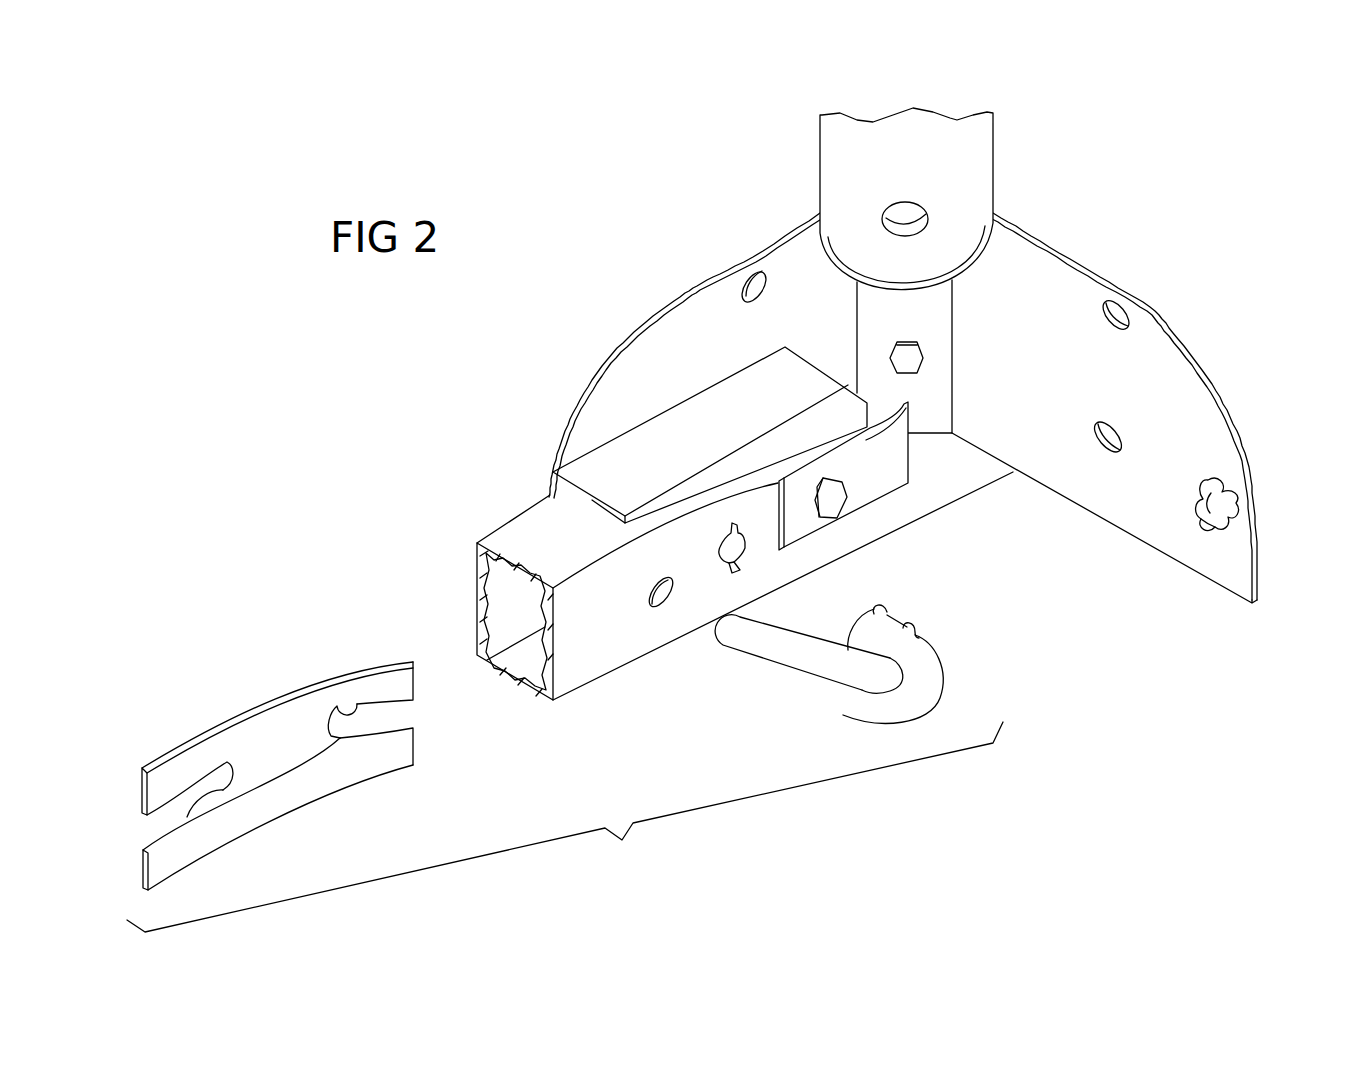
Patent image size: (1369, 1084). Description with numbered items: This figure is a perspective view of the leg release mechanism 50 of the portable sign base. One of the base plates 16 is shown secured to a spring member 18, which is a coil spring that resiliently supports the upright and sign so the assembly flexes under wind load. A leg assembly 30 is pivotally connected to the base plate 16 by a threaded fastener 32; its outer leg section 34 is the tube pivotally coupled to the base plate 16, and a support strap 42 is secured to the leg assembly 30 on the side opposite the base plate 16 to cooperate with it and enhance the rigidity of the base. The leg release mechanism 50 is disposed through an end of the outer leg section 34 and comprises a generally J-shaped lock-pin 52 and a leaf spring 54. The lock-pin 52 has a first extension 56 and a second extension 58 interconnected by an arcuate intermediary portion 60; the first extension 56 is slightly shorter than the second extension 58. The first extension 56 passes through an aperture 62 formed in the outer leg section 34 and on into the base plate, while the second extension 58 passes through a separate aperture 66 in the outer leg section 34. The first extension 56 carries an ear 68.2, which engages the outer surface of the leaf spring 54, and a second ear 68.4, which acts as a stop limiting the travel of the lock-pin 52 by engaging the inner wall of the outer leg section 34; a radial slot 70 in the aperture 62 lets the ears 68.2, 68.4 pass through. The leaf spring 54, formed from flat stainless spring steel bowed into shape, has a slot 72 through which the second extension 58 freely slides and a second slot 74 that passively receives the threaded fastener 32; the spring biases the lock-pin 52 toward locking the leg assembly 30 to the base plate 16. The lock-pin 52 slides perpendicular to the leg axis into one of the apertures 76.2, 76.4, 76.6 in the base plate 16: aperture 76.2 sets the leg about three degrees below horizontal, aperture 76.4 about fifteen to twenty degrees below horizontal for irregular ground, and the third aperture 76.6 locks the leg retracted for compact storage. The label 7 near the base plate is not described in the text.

The hole 7 is at (1115, 442).
The base plate 16 is at (939, 408).
The spring member 18 is at (975, 167).
The leg assembly 30 is at (745, 541).
The threaded fastener 32 is at (833, 502).
The outer leg section 34 is at (745, 523).
The support strap 42 is at (880, 482).
The leg release mechanism 50 is at (565, 827).
The lock-pin 52 is at (877, 672).
The leaf spring 54 is at (277, 762).
The first extension 56 is at (903, 627).
The second extension 58 is at (787, 668).
The arcuate intermediary portion 60 is at (908, 702).
The aperture 62 is at (780, 575).
The aperture 66 is at (667, 605).
The ear 68.2 is at (917, 640).
The second ear 68.4 is at (884, 613).
The radial slot 70 is at (740, 567).
The slot 72 is at (223, 791).
The second slot 74 is at (342, 705).
The aperture 76.2 is at (1225, 500).
The aperture 76.4 is at (1208, 527).
The third aperture 76.6 is at (756, 272).